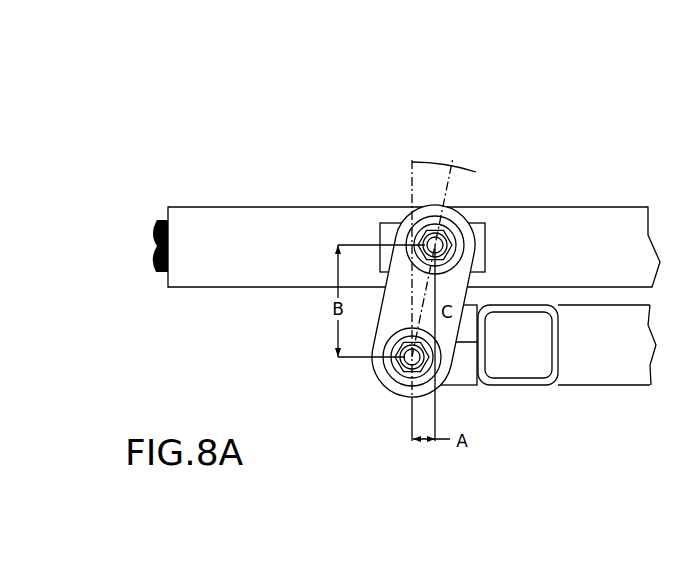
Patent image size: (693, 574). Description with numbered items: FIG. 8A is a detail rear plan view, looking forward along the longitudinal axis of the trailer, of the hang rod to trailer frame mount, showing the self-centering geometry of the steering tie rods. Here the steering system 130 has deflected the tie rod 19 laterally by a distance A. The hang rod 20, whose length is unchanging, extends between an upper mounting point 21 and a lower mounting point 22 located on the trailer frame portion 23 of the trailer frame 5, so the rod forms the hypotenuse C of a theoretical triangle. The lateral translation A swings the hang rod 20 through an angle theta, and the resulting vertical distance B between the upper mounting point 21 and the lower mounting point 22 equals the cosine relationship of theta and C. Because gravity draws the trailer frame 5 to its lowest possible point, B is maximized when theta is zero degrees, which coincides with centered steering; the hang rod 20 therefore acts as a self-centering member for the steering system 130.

The trailer frame 5 is at (634, 371).
The tie rod 19 is at (619, 209).
The hang rod 20 is at (397, 216).
The upper mounting point 21 is at (431, 245).
The lower mounting point 22 is at (409, 360).
The trailer frame portion 23 is at (547, 386).
The steering system 130 is at (433, 150).